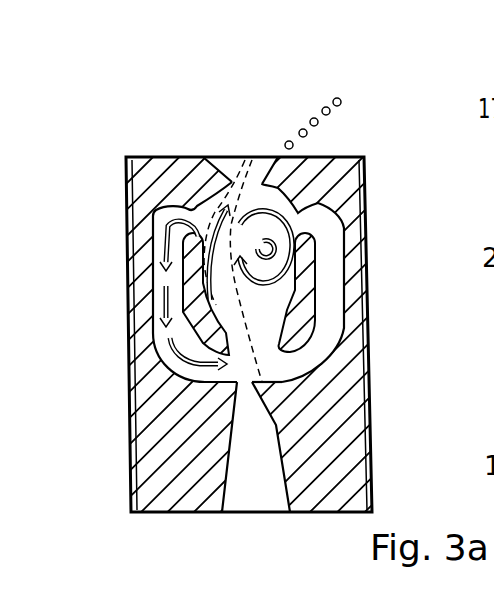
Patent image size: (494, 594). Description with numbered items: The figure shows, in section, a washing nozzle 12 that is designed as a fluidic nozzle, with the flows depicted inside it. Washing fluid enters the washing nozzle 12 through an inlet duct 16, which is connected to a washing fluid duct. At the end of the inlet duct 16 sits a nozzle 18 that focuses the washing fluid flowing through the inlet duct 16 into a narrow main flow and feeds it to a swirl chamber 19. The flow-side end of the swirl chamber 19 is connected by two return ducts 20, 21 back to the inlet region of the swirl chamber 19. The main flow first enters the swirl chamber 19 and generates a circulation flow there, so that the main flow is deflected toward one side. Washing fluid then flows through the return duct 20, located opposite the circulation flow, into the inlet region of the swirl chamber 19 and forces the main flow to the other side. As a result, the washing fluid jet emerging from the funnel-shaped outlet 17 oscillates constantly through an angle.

The washing nozzle 12 is at (163, 418).
The inlet duct 16 is at (243, 483).
The funnel-shaped outlet 17 is at (235, 170).
The nozzle 18 is at (250, 381).
The swirl chamber 19 is at (256, 307).
The return duct 20 is at (168, 220).
The return duct 21 is at (323, 223).